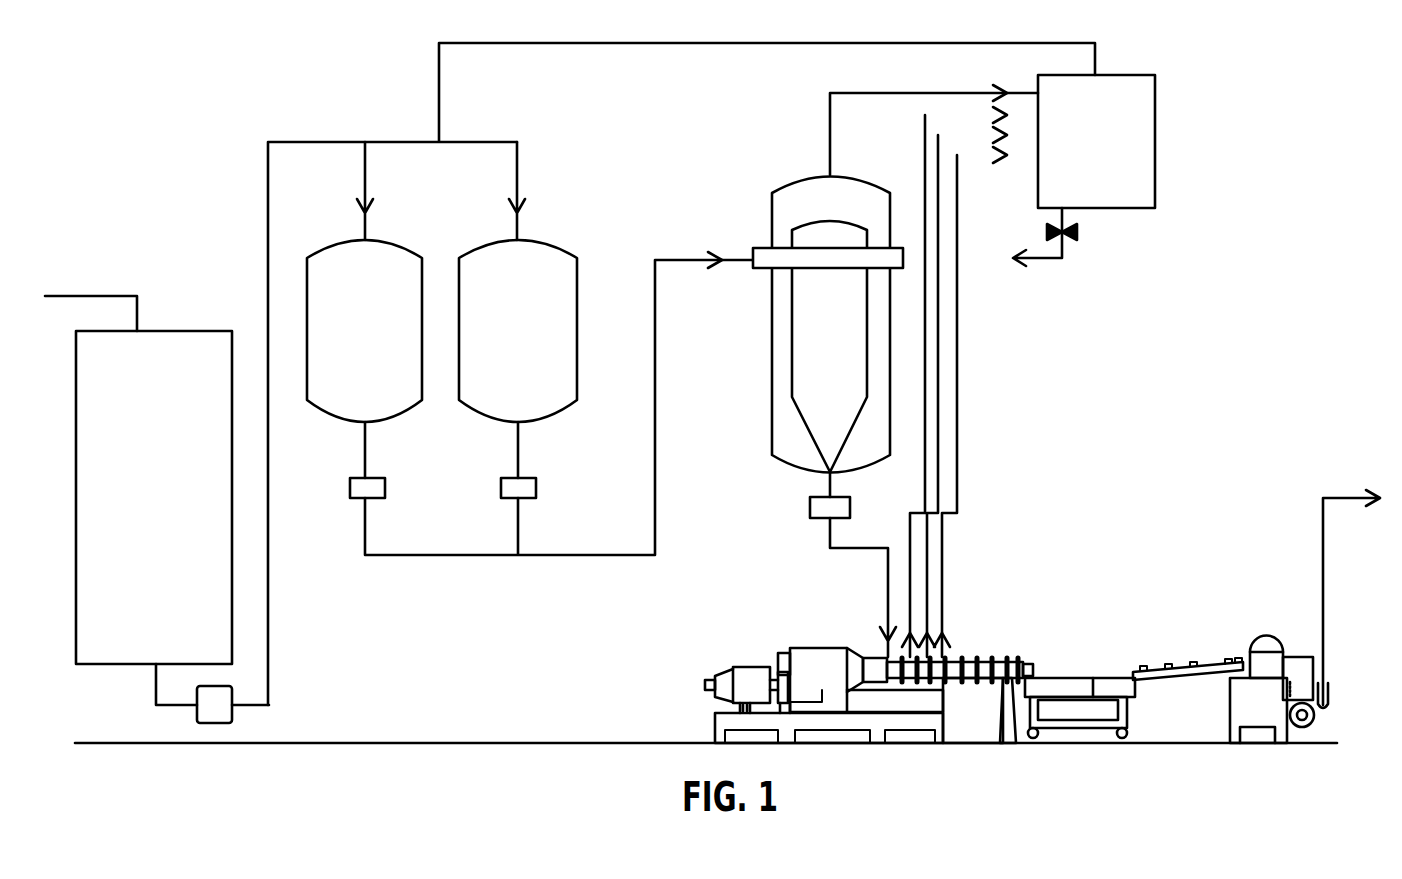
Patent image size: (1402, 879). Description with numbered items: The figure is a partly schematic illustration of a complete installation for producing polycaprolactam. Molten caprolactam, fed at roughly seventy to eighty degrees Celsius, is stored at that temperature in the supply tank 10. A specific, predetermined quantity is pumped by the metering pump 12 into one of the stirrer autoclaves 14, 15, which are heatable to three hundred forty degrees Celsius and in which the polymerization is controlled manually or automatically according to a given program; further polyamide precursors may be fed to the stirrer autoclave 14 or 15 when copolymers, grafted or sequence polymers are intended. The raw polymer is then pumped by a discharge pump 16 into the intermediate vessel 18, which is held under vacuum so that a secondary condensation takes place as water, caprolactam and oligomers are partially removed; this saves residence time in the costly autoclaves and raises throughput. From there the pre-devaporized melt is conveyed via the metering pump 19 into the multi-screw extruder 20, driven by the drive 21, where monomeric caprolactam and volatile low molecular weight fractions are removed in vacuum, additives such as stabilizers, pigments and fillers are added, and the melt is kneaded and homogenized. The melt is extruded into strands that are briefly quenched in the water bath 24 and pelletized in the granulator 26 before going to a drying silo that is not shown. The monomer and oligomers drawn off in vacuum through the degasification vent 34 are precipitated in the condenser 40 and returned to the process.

The supply tank 10 is at (94, 476).
The metering pump 12 is at (221, 707).
The stirrer autoclave 14 is at (382, 263).
The stirrer autoclave 15 is at (538, 263).
The discharge pump 16 is at (385, 488).
The intermediate vessel 18 is at (808, 341).
The metering pump 19 is at (814, 508).
The multi-screw extruder 20 is at (818, 667).
The drive 21 is at (745, 680).
The water bath 24 is at (1060, 683).
The granulator 26 is at (1250, 697).
The degasification vent 34 is at (945, 548).
The condenser 40 is at (1100, 188).